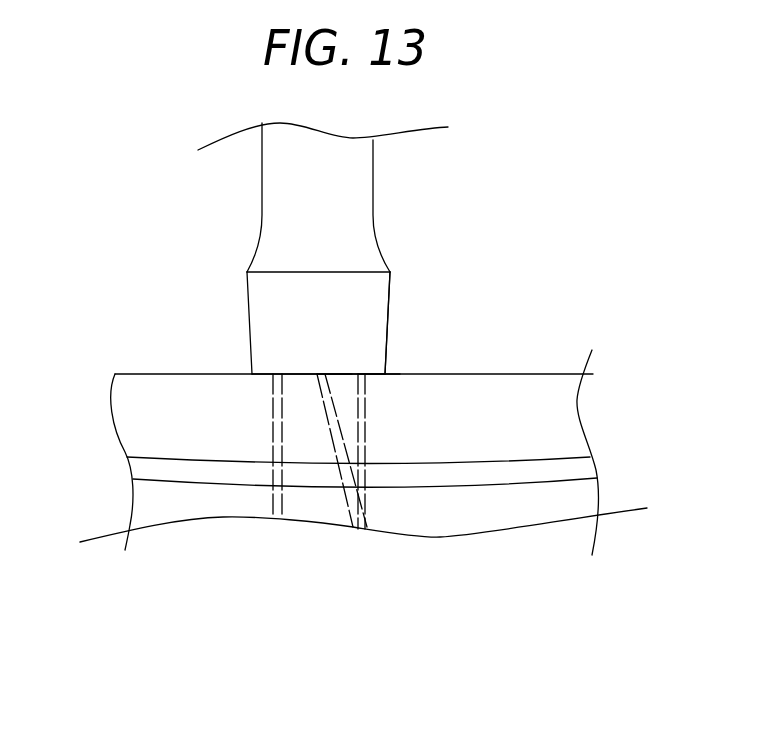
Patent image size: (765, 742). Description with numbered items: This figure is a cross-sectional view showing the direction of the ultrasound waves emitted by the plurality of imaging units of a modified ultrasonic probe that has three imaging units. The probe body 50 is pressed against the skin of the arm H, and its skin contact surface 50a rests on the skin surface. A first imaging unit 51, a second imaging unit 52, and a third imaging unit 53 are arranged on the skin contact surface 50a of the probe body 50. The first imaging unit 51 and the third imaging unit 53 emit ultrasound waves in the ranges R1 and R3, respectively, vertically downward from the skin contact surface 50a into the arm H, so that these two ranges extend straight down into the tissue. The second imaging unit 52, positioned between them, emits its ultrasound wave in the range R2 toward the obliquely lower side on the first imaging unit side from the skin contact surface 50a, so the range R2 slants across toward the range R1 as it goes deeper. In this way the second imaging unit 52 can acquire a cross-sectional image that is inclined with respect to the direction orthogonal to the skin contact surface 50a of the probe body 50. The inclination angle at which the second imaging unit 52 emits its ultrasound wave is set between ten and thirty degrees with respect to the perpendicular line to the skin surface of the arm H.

The probe body 50 is at (252, 252).
The skin contact surface 50a is at (273, 374).
The first imaging unit 51 is at (370, 374).
The second imaging unit 52 is at (324, 374).
The third imaging unit 53 is at (297, 374).
The arm H is at (526, 374).
The range of ultrasound wave of first imaging unit R1 is at (370, 460).
The range of ultrasound wave of second imaging unit R2 is at (350, 463).
The range of ultrasound wave of third imaging unit R3 is at (270, 462).